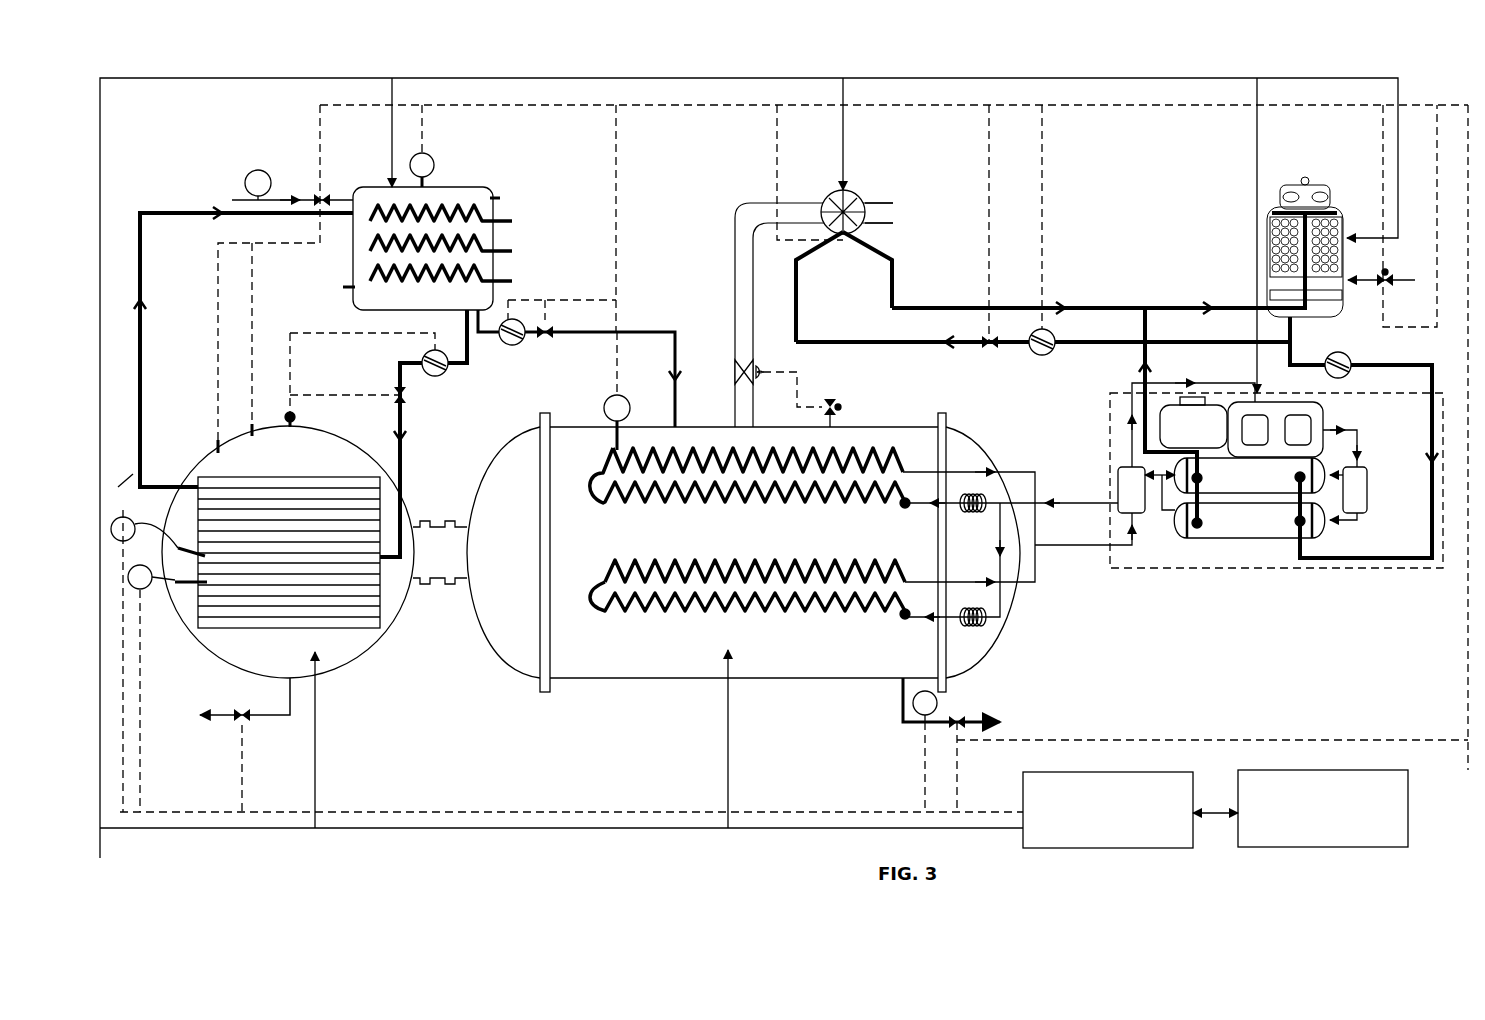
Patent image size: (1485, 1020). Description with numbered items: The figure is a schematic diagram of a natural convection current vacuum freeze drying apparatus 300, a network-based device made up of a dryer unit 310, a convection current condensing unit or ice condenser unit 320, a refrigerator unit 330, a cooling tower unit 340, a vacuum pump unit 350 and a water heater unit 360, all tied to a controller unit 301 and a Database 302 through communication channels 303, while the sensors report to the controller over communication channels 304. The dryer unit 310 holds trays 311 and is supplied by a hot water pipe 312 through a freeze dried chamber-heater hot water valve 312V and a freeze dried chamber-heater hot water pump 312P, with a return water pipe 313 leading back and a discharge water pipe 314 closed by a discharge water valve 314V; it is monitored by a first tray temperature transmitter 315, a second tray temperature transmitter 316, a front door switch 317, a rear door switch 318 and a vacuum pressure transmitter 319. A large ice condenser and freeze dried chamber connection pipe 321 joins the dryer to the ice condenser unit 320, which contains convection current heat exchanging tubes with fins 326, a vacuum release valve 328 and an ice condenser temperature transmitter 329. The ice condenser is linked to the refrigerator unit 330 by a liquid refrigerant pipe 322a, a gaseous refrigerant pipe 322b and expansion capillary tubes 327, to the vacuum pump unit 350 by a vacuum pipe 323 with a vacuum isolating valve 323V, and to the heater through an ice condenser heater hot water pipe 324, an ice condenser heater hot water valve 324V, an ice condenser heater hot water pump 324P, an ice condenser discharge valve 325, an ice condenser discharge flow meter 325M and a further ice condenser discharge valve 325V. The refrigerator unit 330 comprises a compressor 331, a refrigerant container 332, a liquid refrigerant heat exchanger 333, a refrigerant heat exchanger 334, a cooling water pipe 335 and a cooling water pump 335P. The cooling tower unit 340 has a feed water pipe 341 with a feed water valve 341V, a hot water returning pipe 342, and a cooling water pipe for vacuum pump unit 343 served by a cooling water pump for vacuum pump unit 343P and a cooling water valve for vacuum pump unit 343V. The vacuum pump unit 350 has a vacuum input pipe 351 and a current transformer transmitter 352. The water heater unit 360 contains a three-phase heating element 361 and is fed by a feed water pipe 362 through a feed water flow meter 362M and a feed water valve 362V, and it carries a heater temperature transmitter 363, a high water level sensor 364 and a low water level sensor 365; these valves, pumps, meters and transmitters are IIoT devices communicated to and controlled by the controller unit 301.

The convection current vacuum freeze drying apparatus 300 is at (1012, 57).
The controller unit 301 is at (776, 749).
The database 302 is at (1323, 808).
The communication channels 303 is at (1152, 78).
The communication channels 304 is at (1080, 105).
The dryer unit 310 is at (347, 632).
The trays 311 is at (270, 477).
The hot water pipe 312 is at (402, 425).
The freeze dried chamber-heater hot water pump 312P is at (422, 357).
The freeze dried chamber-heater hot water valve 312V is at (405, 398).
The return water pipe 313 is at (140, 273).
The discharge water pipe 314 is at (290, 685).
The discharge water valve 314V is at (240, 716).
The first tray temperature transmitter 315 is at (146, 475).
The second tray temperature transmitter 316 is at (148, 553).
The front door switch 317 is at (218, 447).
The rear door switch 318 is at (252, 432).
The vacuum pressure transmitter 319 is at (298, 416).
The convection current condensing unit 320 is at (878, 427).
The large ice condenser and freeze dried chamber connection pipe 321 is at (440, 548).
The liquid refrigerant pipe 322a is at (1080, 427).
The gaseous refrigerant pipe 322b is at (1090, 517).
The vacuum pipe 323 is at (735, 267).
The vacuum isolating valve 323V is at (738, 370).
The ice condenser heater hot water pipe 324 is at (628, 325).
The ice condenser heater hot water pump 324P is at (508, 340).
The ice condenser heater hot water valve 324V is at (545, 340).
The ice condenser discharge valve 325 is at (885, 675).
The ice condenser discharge flow meter 325M is at (940, 672).
The ice condenser discharge valve 325V is at (958, 695).
The convection current heat exchanging tubes with fins 326 is at (688, 463).
The expansion capillary tubes 327 is at (967, 475).
The vacuum release valve 328 is at (831, 398).
The ice condenser temperature transmitter 329 is at (627, 398).
The refrigerator unit 330 is at (1257, 538).
The compressor 331 is at (1325, 408).
The refrigerant container 332 is at (1368, 455).
The liquid refrigerant heat exchanger 333 is at (1249, 485).
The refrigerant heat exchanger 334 is at (1143, 482).
The cooling water pipe 335 is at (1430, 348).
The cooling water pump 335P is at (1348, 356).
The cooling tower unit 340 is at (1358, 180).
The feed water pipe 341 is at (1402, 278).
The feed water valve 341V is at (1383, 283).
The hot water returning pipe 342 is at (1097, 290).
The cooling water pipe for vacuum pump unit 343 is at (817, 337).
The cooling water valve for vacuum pump unit 343V is at (992, 353).
The cooling water pump for vacuum pump unit 343P is at (1042, 358).
The vacuum pump unit 350 is at (857, 188).
The vacuum input pipe 351 is at (888, 203).
The current transformer transmitter 352 is at (843, 240).
The water heater unit 360 is at (483, 187).
The three-phase heating element 361 is at (507, 270).
The feed water pipe 362 is at (233, 195).
The feed water flow meter 362M is at (257, 170).
The feed water valve 362V is at (326, 192).
The heater temperature transmitter 363 is at (438, 153).
The high water level sensor 364 is at (500, 198).
The low water level sensor 365 is at (343, 287).